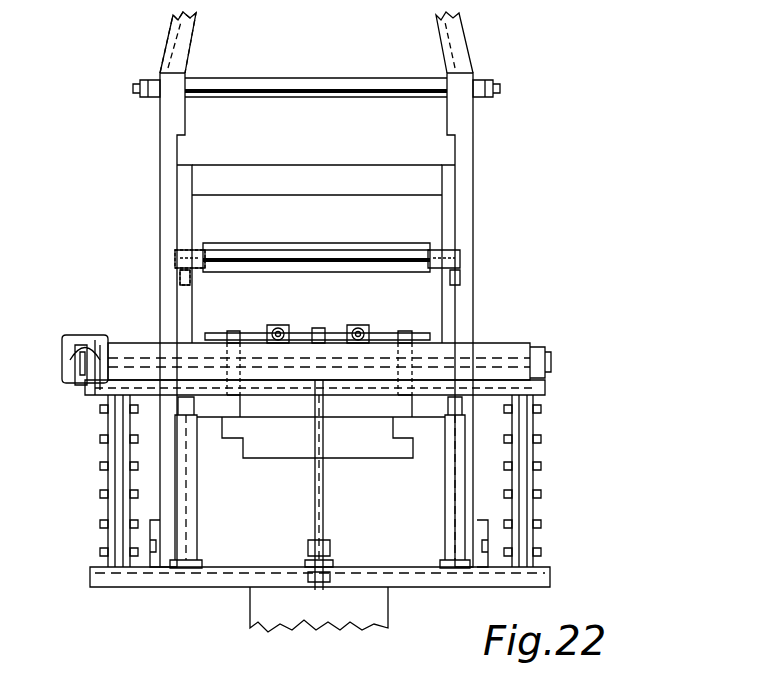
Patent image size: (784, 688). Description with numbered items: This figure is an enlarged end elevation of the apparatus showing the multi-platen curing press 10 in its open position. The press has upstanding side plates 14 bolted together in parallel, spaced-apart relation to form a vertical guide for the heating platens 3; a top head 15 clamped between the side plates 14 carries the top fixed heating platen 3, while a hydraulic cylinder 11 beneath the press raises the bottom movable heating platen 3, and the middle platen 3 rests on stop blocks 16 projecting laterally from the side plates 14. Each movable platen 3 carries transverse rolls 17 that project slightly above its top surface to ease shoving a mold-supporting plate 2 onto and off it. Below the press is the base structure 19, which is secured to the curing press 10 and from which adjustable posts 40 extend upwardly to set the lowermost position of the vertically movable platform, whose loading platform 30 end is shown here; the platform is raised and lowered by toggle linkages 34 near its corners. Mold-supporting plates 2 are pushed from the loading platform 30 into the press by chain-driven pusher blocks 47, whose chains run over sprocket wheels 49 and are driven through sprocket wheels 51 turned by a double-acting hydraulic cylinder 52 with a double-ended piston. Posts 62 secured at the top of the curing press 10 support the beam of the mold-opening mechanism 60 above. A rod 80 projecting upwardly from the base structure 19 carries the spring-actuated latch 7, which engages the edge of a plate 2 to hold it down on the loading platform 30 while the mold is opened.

The mold-supporting plate 2 is at (300, 245).
The heating platen 3 is at (411, 184).
The spring-actuated latch 7 is at (319, 328).
The curing press 10 is at (486, 127).
The hydraulic cylinder 11 is at (365, 601).
The side plates 14 is at (160, 193).
The top head 15 is at (337, 129).
The stop blocks 16 is at (176, 280).
The transverse rolls 17 is at (243, 250).
The base structure 19 is at (216, 598).
The loading platform 30 is at (148, 332).
The toggle linkages 34 is at (100, 437).
The adjustable posts 40 is at (200, 518).
The pusher blocks 47 is at (232, 330).
The sprocket wheels 49 is at (321, 426).
The sprocket wheels 51 is at (81, 385).
The double-acting hydraulic cylinder 52 is at (65, 345).
The arm assembly 60 is at (207, 40).
The posts 62 is at (171, 37).
The rod 80 is at (315, 491).